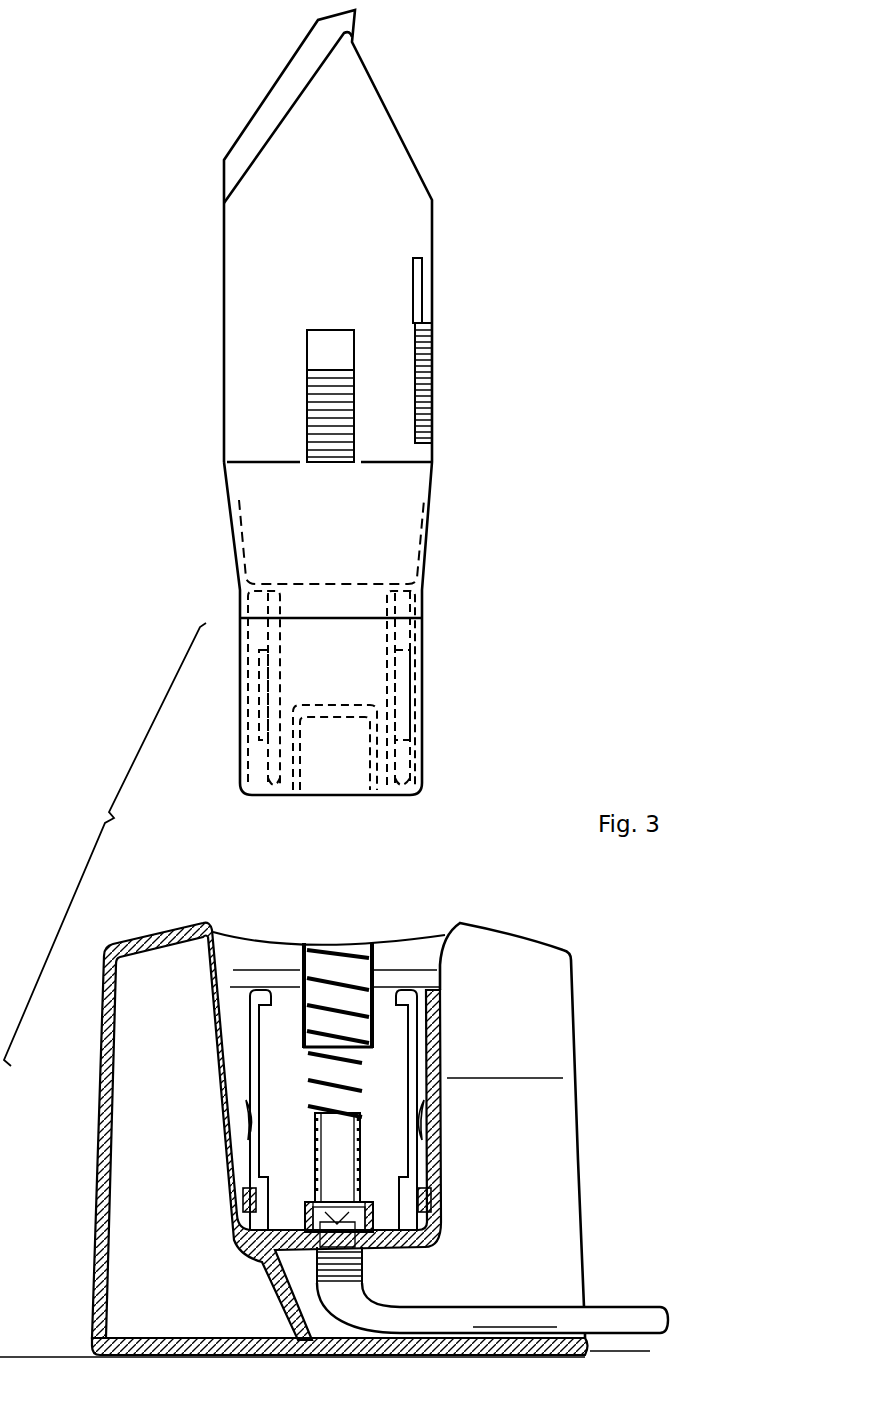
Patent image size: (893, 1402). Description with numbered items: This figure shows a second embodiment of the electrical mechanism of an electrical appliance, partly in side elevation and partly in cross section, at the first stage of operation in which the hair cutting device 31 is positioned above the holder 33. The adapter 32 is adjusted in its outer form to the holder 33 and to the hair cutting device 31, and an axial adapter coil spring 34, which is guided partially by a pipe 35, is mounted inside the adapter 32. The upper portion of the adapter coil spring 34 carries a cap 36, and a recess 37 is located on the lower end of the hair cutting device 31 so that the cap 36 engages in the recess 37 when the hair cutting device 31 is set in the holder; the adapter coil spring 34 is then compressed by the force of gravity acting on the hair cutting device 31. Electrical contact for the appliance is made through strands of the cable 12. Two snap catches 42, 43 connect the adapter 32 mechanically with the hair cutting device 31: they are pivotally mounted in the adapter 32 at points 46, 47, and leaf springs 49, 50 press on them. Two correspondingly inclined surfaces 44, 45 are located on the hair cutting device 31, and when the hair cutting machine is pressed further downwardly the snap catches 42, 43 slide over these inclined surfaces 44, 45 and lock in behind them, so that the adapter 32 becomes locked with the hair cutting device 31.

The cable 12 is at (632, 1313).
The hair cutting device 31 is at (404, 195).
The adapter 32 is at (444, 1110).
The holder 33 is at (100, 1054).
The adapter coil spring 34 is at (356, 1090).
The pipe 35 is at (362, 1153).
The cap 36 is at (378, 942).
The recess 37 is at (360, 785).
The snap catch 42 is at (262, 1055).
The snap catch 43 is at (417, 1068).
The inclined surface 44 is at (268, 722).
The inclined surface 45 is at (400, 720).
The pivot point 46 is at (245, 1220).
The pivot point 47 is at (430, 1218).
The leaf spring 49 is at (228, 1133).
The leaf spring 50 is at (428, 1126).